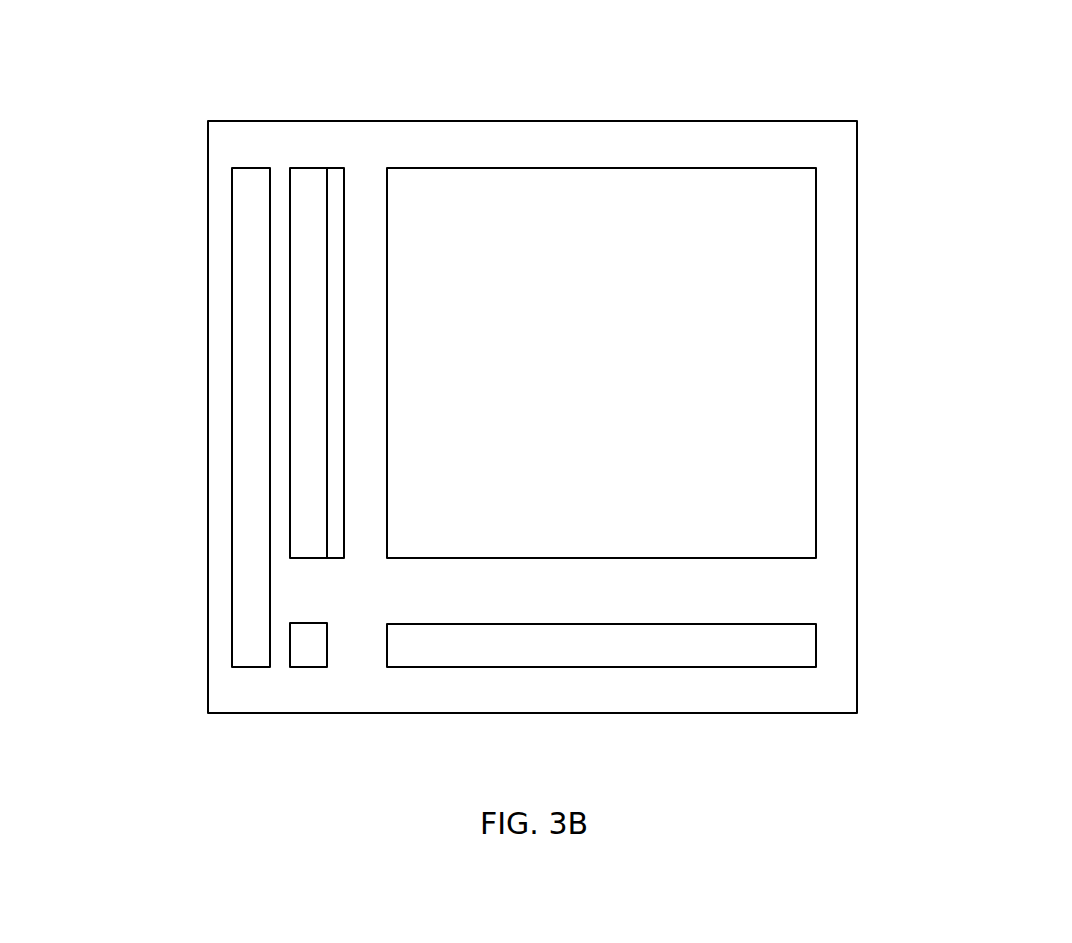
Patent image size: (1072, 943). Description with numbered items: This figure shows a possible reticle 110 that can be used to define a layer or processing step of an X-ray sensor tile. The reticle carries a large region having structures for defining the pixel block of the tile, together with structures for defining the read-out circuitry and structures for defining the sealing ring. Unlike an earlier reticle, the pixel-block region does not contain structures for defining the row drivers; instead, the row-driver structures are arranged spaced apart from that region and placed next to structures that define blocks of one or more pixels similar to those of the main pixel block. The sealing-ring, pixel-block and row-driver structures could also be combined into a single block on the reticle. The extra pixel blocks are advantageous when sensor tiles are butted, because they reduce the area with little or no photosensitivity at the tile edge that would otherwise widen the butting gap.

The reticle 110 is at (858, 172).